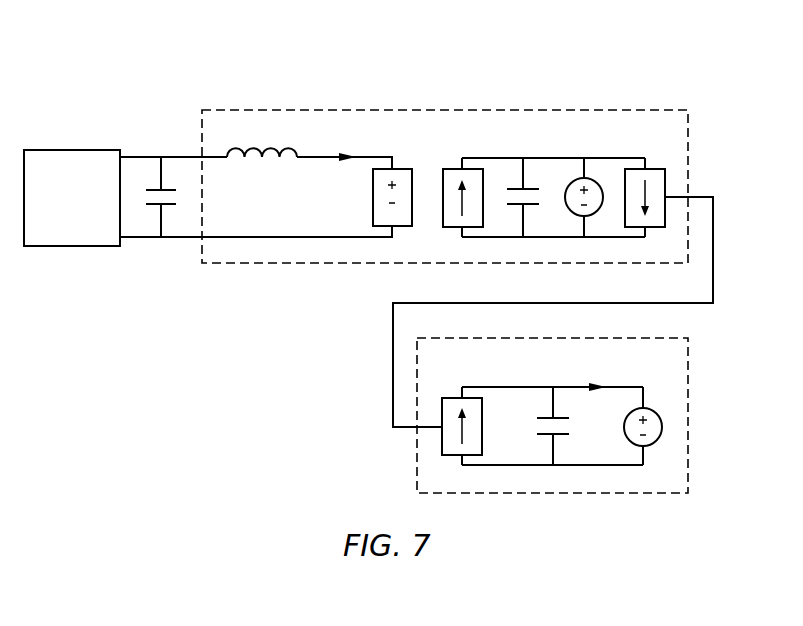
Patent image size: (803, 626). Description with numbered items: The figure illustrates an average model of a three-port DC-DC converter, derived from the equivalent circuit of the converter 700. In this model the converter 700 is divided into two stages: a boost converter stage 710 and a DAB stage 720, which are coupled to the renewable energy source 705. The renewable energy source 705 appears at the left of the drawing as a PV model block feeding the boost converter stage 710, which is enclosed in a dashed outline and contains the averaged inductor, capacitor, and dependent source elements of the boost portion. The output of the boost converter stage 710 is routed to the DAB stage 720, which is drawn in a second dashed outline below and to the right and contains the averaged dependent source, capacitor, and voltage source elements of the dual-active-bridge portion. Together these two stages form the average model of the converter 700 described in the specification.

The converter 700 is at (118, 22).
The renewable energy source 705 is at (84, 150).
The boost converter stage 710 is at (629, 108).
The DAB stage 720 is at (688, 415).